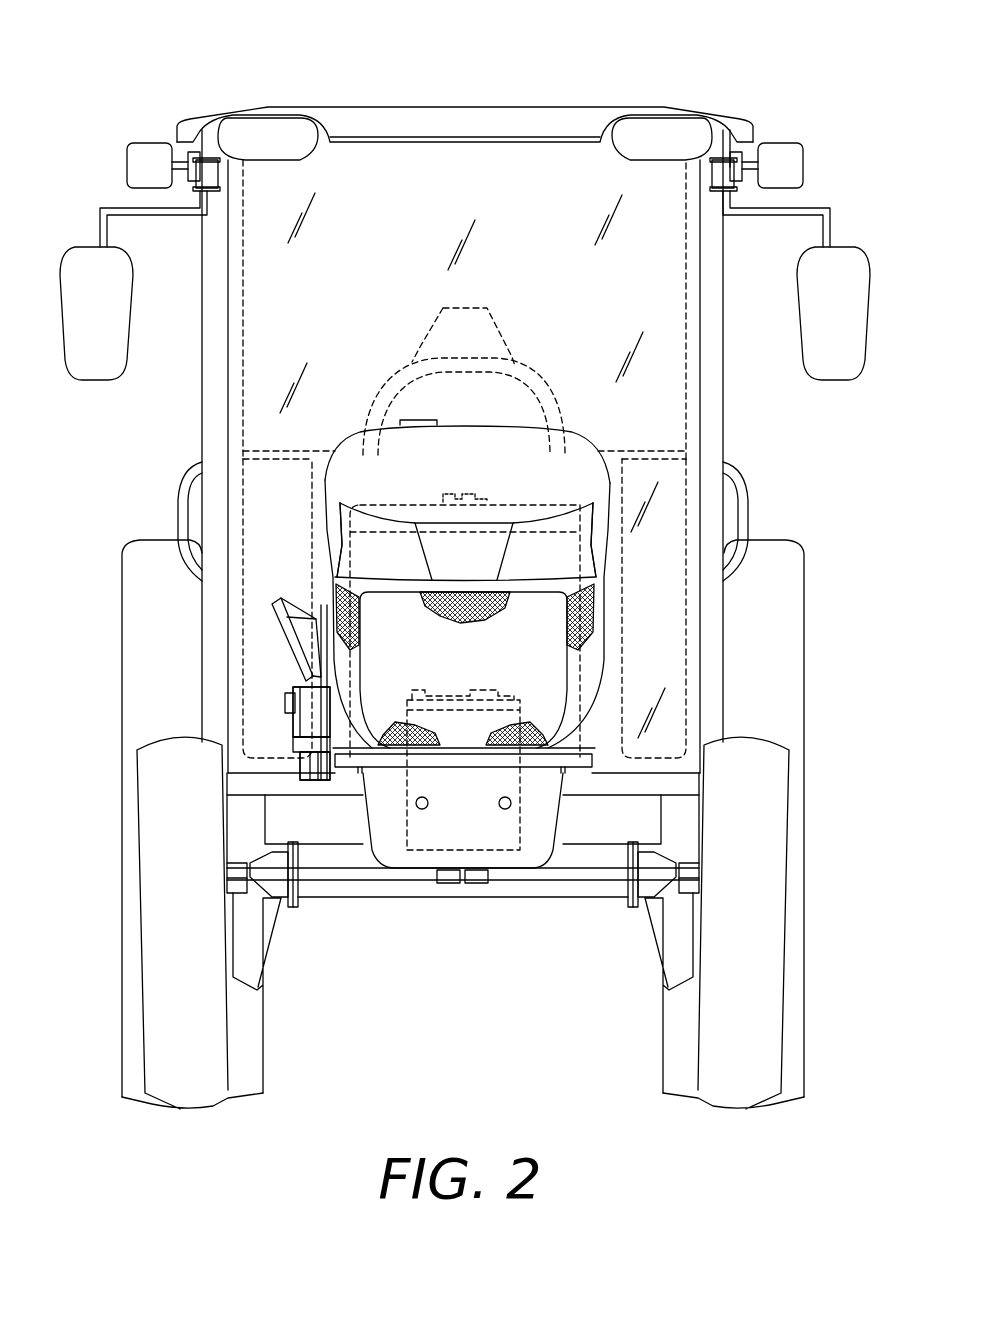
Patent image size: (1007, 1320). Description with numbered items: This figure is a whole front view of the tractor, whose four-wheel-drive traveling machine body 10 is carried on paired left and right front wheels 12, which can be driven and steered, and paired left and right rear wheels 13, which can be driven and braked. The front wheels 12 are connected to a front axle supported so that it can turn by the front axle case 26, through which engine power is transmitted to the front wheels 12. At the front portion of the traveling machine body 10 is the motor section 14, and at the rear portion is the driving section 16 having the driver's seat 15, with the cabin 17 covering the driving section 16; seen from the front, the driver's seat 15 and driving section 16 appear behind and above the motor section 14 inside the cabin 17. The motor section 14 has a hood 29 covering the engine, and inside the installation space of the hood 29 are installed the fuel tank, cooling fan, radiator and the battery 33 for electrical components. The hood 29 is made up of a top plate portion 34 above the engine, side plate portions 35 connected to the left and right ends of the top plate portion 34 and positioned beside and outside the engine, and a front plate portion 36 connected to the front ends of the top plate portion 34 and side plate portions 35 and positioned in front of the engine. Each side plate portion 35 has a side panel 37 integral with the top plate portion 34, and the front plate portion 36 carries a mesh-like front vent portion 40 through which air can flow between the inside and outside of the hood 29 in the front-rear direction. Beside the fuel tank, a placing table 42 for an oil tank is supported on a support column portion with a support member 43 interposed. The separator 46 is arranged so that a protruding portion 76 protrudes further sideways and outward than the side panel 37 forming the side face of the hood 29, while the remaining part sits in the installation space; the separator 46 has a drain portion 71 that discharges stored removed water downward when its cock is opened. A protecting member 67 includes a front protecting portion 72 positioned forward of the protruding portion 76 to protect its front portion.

The traveling machine body 10 is at (487, 950).
The front wheels 12 is at (167, 933).
The rear wheels 13 is at (143, 653).
The motor section 14 is at (541, 490).
The driver's seat 15 is at (430, 348).
The driving section 16 is at (548, 342).
The cabin 17 is at (457, 88).
The front axle case 26 is at (357, 890).
The hood 29 is at (351, 429).
The battery 33 is at (432, 850).
The top plate portion 34 is at (472, 440).
The side plate portions 35 is at (467, 572).
The front plate portion 36 is at (573, 580).
The side panel 37 is at (333, 540).
The front vent portion 40 is at (537, 738).
The placing table 42 is at (293, 667).
The support member 43 is at (300, 630).
The separator 46 is at (232, 712).
The protecting member 67 is at (315, 766).
The drain portion 71 is at (290, 775).
The front protecting portion 72 is at (323, 780).
The protruding portion 76 is at (293, 730).